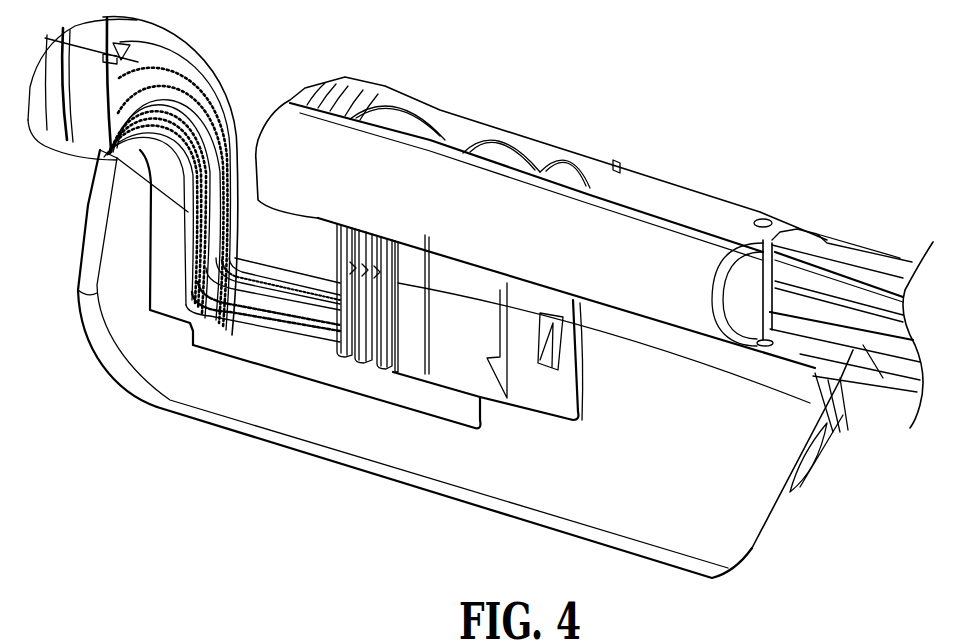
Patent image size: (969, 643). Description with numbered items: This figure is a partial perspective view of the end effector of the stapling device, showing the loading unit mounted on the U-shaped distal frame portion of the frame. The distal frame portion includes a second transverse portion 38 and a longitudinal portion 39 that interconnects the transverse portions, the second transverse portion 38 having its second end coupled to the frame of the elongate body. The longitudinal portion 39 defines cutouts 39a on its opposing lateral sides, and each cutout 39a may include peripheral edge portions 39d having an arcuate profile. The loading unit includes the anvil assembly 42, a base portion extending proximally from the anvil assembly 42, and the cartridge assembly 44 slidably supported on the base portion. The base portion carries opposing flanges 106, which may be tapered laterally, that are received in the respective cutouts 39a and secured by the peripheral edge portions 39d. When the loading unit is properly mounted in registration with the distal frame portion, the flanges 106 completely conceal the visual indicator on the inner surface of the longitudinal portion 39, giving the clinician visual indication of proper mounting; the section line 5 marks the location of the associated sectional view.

The second transverse portion 38 is at (743, 438).
The longitudinal portion 39 is at (497, 478).
The cutouts 39a is at (385, 378).
The peripheral edge portions 39d is at (191, 337).
The anvil assembly 42 is at (85, 135).
The cartridge assembly 44 is at (490, 197).
The opposing flanges 106 is at (218, 340).
The section line 5- 5 is at (250, 22).